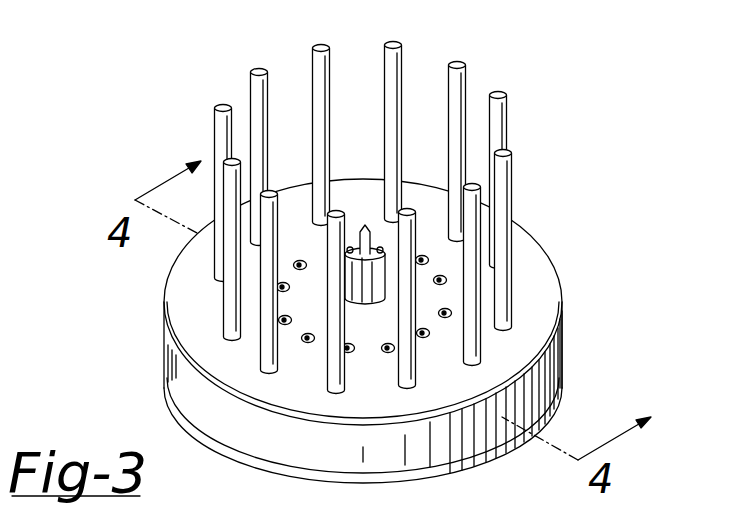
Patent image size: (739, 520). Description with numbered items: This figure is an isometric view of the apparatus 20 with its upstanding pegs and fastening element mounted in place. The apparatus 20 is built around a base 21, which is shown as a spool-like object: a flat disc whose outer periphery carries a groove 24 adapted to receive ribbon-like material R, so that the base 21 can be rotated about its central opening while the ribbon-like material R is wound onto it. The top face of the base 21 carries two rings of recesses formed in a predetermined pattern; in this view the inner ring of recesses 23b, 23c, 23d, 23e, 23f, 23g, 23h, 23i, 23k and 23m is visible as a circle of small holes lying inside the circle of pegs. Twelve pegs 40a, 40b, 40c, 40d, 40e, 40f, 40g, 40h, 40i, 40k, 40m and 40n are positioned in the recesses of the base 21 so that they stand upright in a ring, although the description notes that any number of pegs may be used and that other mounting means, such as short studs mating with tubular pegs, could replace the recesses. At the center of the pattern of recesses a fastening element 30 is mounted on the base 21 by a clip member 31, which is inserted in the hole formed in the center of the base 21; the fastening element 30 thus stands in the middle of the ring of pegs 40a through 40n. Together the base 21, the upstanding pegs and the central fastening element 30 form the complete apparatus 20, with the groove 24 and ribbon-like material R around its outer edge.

The apparatus 20 is at (560, 246).
The base 21 is at (548, 282).
The groove 24 is at (170, 357).
The ribbon-like material R is at (550, 362).
The fastening element 30 is at (366, 230).
The clip member 31 is at (376, 304).
The peg 40a is at (394, 26).
The peg 40b is at (459, 62).
The peg 40c is at (498, 92).
The peg 40d is at (510, 153).
The peg 40e is at (476, 350).
The peg 40f is at (410, 382).
The peg 40g is at (340, 386).
The peg 40h is at (268, 362).
The peg 40i is at (228, 318).
The peg 40k is at (223, 104).
The peg 40m is at (259, 68).
The peg 40n is at (334, 30).
The recess 23b is at (423, 256).
The recess 23c is at (440, 276).
The recess 23d is at (445, 309).
The recess 23e is at (430, 333).
The recess 23f is at (395, 348).
The recess 23g is at (348, 353).
The recess 23h is at (309, 343).
The recess 23i is at (291, 308).
The recess 23k is at (290, 287).
The recess 23m is at (301, 255).